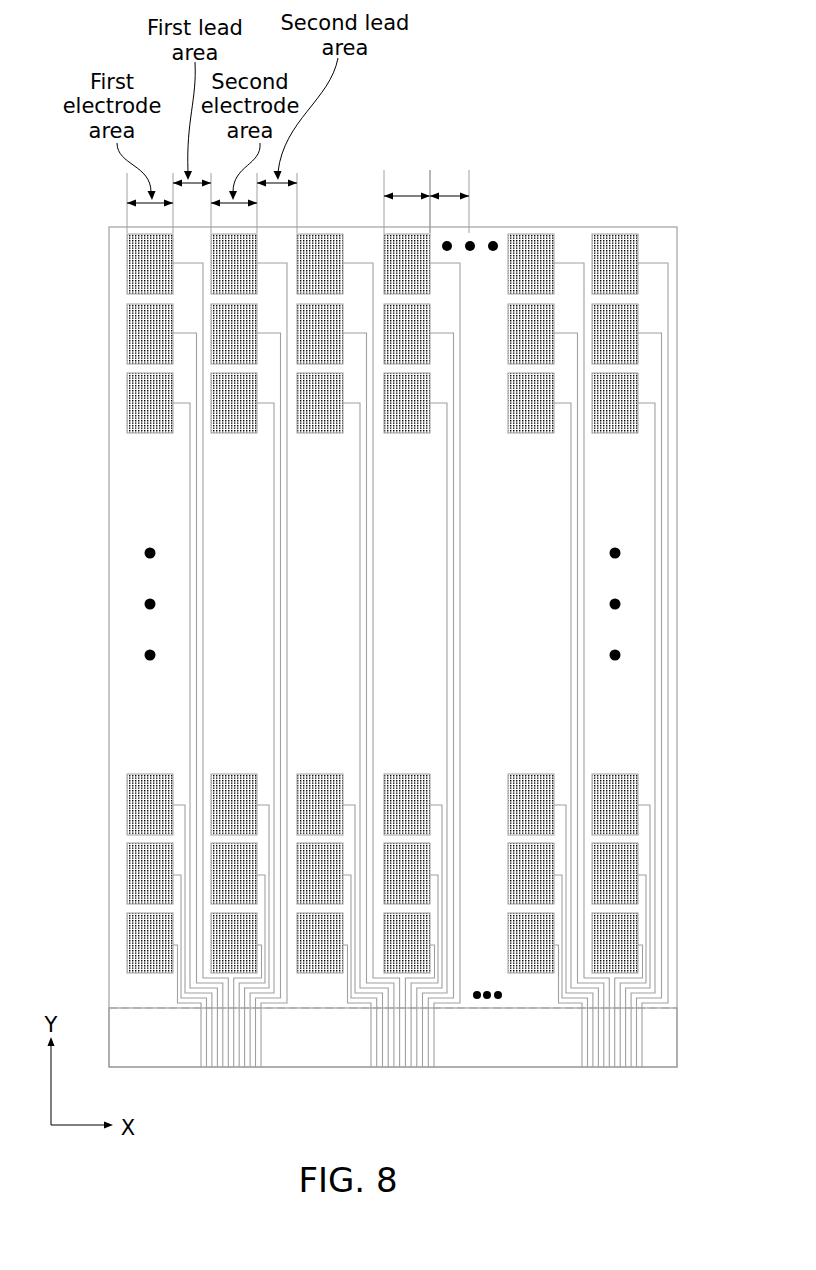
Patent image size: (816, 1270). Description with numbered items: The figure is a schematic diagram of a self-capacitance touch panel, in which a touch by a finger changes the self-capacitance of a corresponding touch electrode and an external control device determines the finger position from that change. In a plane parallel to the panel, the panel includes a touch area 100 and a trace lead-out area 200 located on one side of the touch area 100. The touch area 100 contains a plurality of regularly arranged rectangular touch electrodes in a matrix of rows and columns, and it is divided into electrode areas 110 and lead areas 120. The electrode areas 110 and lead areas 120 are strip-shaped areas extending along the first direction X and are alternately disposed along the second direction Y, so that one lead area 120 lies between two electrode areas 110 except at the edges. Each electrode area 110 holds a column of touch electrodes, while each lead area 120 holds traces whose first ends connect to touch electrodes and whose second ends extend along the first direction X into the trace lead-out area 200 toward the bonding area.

The touch area 100 is at (573, 216).
The electrode area 110 is at (406, 186).
The lead area 120 is at (448, 186).
The trace lead-out area 200 is at (552, 1048).